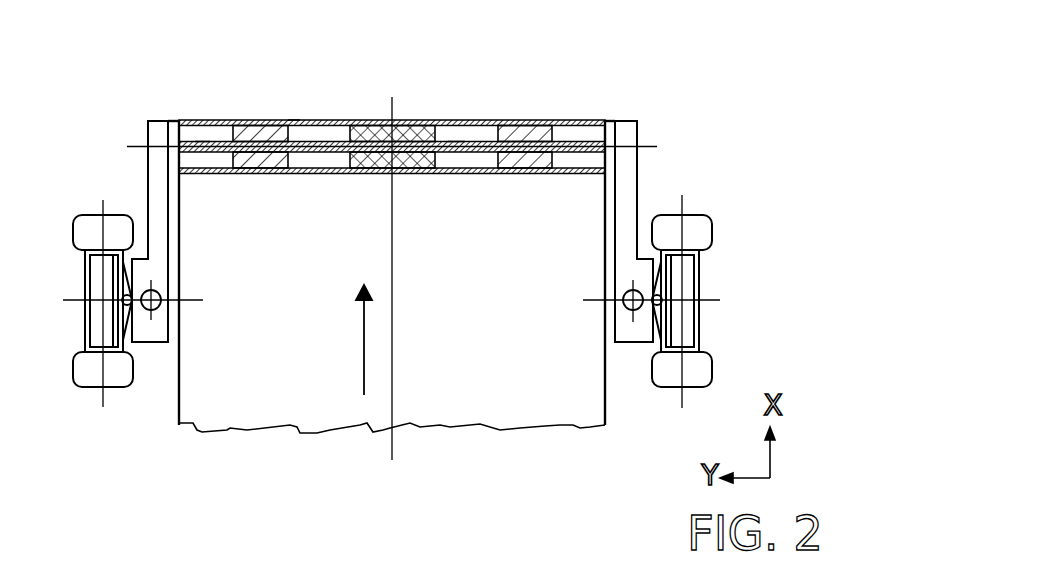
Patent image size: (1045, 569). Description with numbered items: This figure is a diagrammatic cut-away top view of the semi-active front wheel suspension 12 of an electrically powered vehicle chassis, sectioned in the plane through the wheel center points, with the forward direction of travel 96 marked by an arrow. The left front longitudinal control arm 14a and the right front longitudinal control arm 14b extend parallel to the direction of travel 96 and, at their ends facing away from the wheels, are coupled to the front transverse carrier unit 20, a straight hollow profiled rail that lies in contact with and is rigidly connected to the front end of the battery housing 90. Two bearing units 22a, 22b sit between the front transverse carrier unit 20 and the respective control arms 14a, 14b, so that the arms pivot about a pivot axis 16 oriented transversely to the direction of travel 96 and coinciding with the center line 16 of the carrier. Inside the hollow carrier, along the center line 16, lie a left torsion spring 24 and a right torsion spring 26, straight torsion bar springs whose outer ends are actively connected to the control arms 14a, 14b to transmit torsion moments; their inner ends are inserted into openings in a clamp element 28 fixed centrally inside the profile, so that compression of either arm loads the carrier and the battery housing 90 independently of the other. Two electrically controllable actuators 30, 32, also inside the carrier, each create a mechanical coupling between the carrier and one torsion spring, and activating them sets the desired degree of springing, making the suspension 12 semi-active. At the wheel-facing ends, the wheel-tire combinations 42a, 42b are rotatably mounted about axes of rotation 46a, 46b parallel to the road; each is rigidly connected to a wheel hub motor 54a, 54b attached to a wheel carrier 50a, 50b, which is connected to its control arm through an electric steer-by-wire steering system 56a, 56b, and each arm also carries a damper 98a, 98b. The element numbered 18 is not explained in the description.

The front wheel suspension 12 is at (668, 63).
The left front longitudinal control arm 14a is at (160, 137).
The right front longitudinal control arm 14b is at (625, 133).
The center line 16 is at (643, 145).
The inner rod 18 is at (392, 147).
The front transverse carrier unit 20 is at (293, 124).
The bearing unit 22a is at (168, 127).
The bearing unit 22b is at (610, 133).
The left torsion spring 24 is at (201, 141).
The right torsion spring 26 is at (455, 140).
The clamp element 28 is at (368, 120).
The electrically controllable actuator 30 is at (253, 130).
The electrically controllable actuator 32 is at (518, 130).
The wheel-tire combination 42a is at (93, 233).
The wheel-tire combination 42b is at (693, 228).
The axis of rotation 46a is at (192, 302).
The axis of rotation 46b is at (590, 302).
The wheel carrier 50a is at (118, 265).
The wheel carrier 50b is at (667, 268).
The wheel hub motor 54a is at (97, 323).
The wheel hub motor 54b is at (676, 330).
The electric steering system 56a is at (127, 327).
The electric steering system 56b is at (660, 325).
The battery housing 90 is at (452, 410).
The direction of travel 96 is at (362, 348).
The damper 98a is at (153, 310).
The damper 98b is at (632, 305).